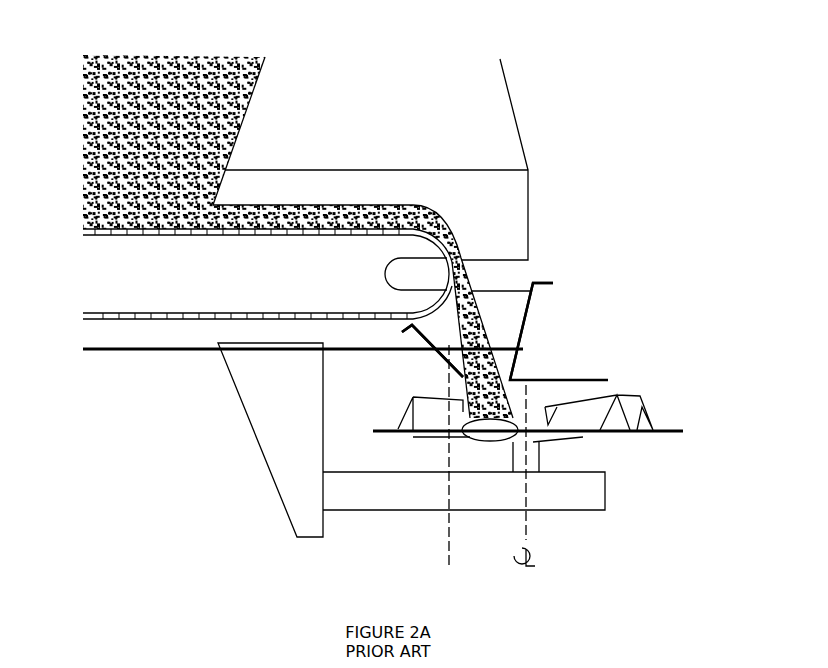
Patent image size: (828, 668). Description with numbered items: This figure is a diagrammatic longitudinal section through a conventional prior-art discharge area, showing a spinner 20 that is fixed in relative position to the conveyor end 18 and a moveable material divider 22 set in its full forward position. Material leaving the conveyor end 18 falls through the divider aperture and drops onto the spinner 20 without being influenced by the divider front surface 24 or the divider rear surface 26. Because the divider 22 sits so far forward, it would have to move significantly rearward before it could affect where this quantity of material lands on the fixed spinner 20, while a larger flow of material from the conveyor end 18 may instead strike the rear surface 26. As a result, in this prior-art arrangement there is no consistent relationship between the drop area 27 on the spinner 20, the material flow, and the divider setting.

The conveyor end 18 is at (448, 549).
The spinner 20 is at (590, 438).
The material divider 22 is at (522, 341).
The divider front surface 24 is at (434, 348).
The divider rear surface 26 is at (520, 347).
The drop area 27 is at (470, 437).